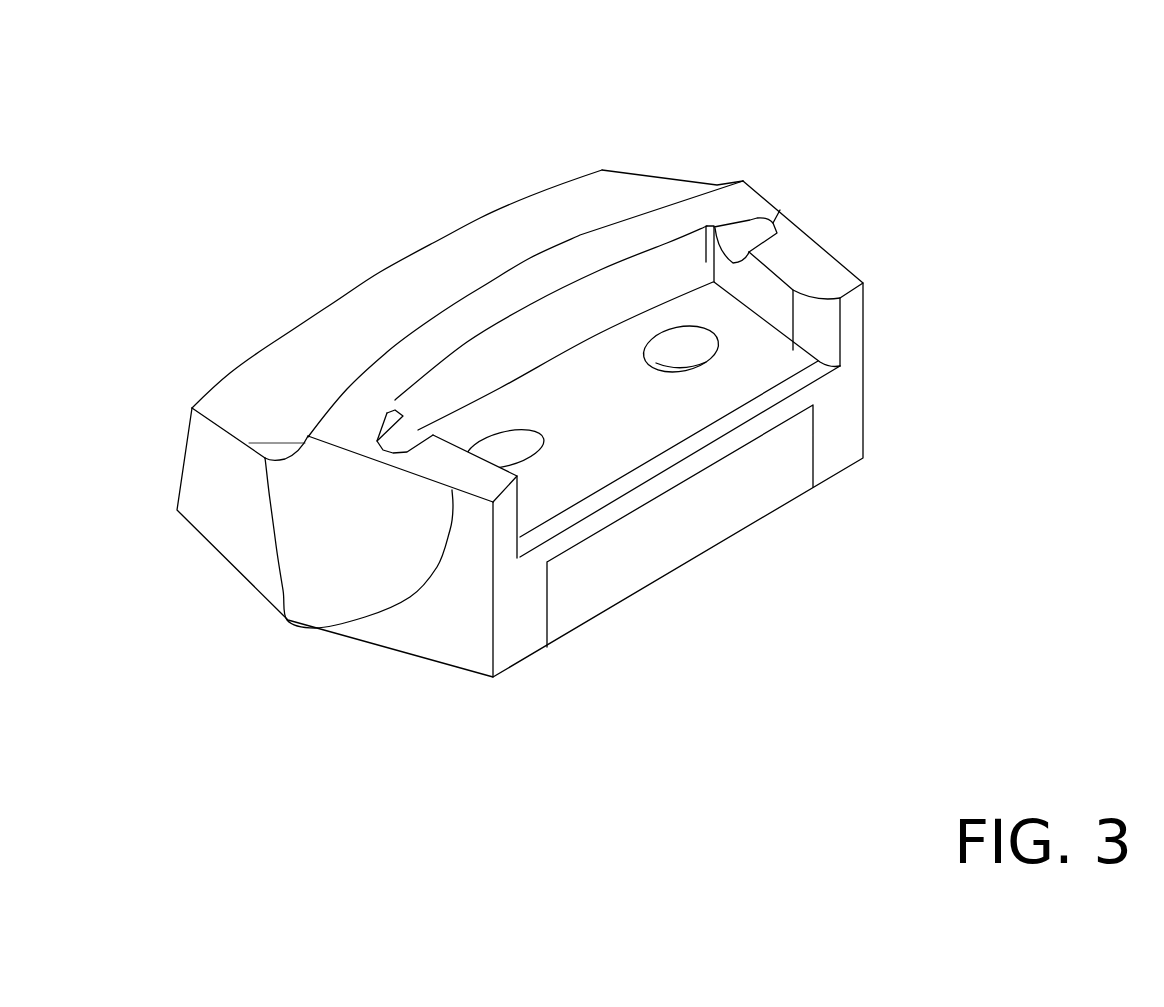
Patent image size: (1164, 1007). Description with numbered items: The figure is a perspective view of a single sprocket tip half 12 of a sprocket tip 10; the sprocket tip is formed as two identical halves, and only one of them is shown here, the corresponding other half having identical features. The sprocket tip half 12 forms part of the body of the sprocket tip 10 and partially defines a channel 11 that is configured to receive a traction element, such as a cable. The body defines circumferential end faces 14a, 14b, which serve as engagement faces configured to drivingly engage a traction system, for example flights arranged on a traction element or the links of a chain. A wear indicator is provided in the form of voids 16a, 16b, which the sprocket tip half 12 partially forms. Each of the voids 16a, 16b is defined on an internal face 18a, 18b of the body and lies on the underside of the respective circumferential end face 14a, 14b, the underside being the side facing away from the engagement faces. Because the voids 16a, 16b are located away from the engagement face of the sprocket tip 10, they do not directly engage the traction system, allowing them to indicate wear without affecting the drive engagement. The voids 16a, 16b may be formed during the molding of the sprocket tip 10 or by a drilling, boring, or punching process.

The sprocket tip 10 is at (869, 388).
The channel 11 is at (580, 197).
The sprocket tip half 12 is at (443, 637).
The circumferential end face 14a is at (837, 250).
The circumferential end face 14b is at (338, 585).
The void 16a is at (746, 230).
The void 16b is at (400, 447).
The internal face 18a is at (773, 303).
The internal face 18b is at (457, 437).